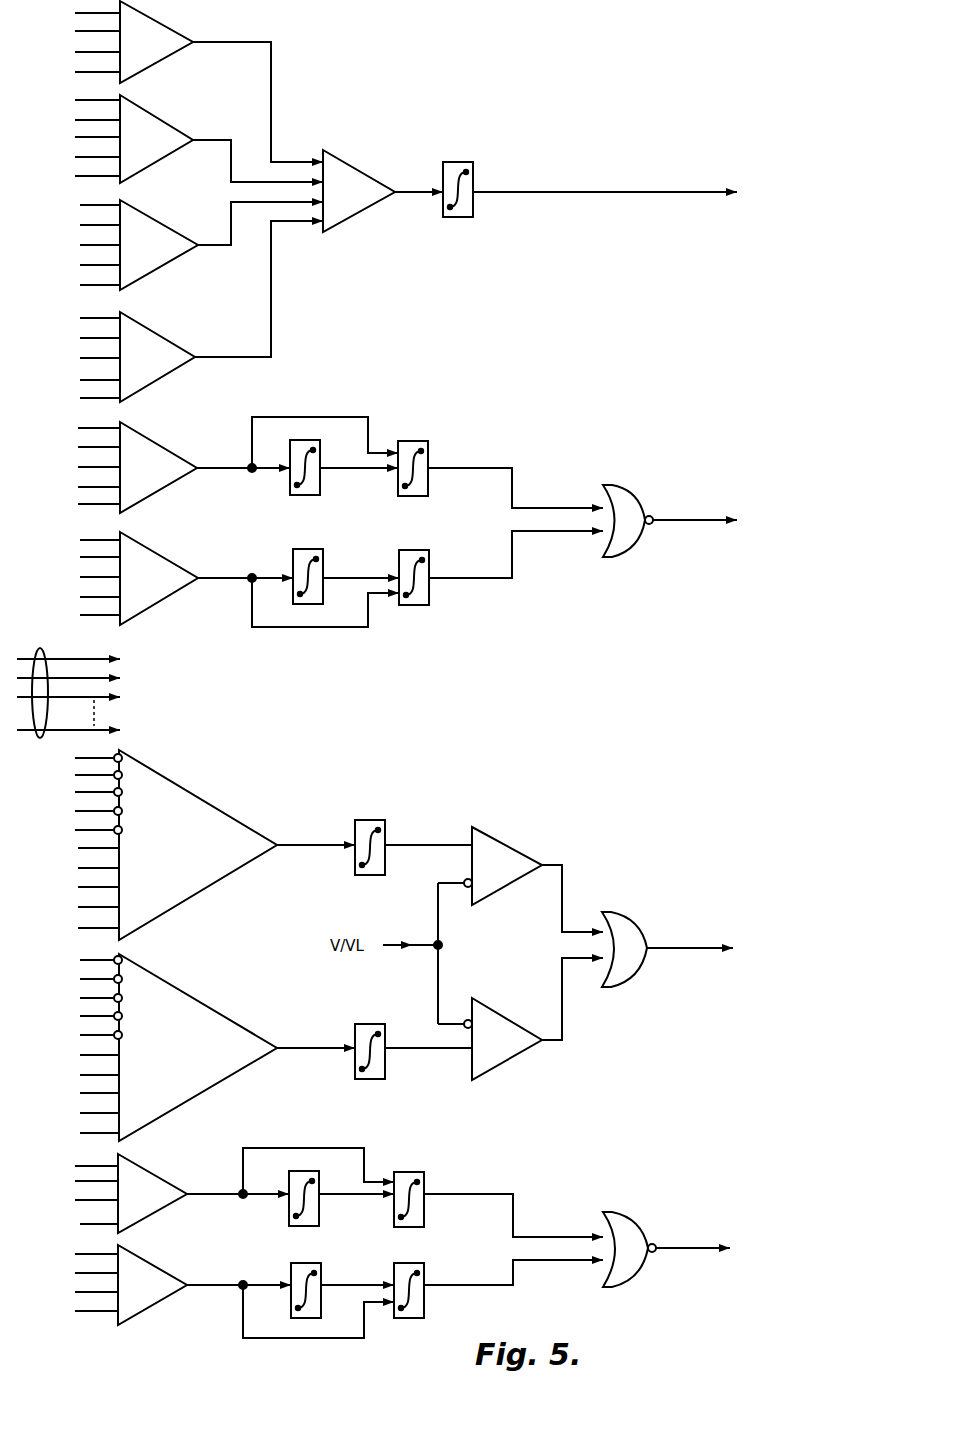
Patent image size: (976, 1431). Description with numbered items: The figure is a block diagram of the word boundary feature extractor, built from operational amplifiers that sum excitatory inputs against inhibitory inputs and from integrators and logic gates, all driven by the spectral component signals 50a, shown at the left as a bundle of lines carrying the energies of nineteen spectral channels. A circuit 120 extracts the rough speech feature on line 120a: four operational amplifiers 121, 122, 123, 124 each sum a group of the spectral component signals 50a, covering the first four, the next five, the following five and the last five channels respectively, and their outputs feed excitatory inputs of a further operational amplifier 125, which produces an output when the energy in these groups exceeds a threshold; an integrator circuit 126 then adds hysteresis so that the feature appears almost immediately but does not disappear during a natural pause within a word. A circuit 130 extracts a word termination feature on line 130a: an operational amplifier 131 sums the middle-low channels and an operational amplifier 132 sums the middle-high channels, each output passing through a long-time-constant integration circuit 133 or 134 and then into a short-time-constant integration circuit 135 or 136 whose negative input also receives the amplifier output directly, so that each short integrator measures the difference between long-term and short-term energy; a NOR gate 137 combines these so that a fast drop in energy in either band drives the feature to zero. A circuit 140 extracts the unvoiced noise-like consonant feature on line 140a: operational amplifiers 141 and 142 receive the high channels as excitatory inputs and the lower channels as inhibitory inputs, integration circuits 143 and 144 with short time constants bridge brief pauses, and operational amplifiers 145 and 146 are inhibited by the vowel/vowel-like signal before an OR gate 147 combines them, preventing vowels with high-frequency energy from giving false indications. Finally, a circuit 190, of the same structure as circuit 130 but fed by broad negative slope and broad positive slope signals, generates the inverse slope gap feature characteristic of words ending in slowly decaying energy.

The operational amplifier 121 is at (167, 30).
The operational amplifier 122 is at (168, 130).
The operational amplifier 123 is at (168, 235).
The operational amplifier 124 is at (168, 347).
The operational amplifier 125 is at (362, 180).
The integrator circuit 126 is at (470, 172).
The line 120a is at (580, 191).
The circuit 120 is at (557, 282).
The operational amplifier 131 is at (176, 444).
The operational amplifier 132 is at (176, 554).
The integration circuit 133 is at (303, 497).
The integration circuit 134 is at (303, 554).
The integration circuit 135 is at (413, 498).
The integration circuit 136 is at (412, 554).
The NOR gate 137 is at (617, 493).
The line 130a is at (670, 516).
The circuit 130 is at (567, 614).
The spectral component signals 50a is at (81, 685).
The operational amplifier 141 is at (222, 824).
The operational amplifier 142 is at (222, 1024).
The integration circuit 143 is at (373, 821).
The integration circuit 144 is at (370, 1025).
The operational amplifier 145 is at (503, 851).
The operational amplifier 146 is at (512, 1029).
The OR gate 147 is at (622, 921).
The line 140a is at (694, 934).
The circuit 140 is at (570, 1087).
The circuit 190 is at (570, 1317).